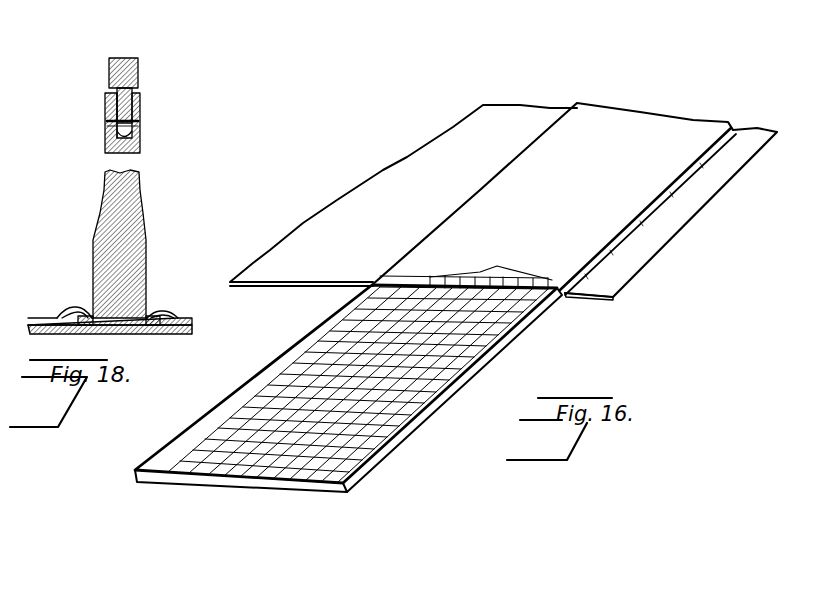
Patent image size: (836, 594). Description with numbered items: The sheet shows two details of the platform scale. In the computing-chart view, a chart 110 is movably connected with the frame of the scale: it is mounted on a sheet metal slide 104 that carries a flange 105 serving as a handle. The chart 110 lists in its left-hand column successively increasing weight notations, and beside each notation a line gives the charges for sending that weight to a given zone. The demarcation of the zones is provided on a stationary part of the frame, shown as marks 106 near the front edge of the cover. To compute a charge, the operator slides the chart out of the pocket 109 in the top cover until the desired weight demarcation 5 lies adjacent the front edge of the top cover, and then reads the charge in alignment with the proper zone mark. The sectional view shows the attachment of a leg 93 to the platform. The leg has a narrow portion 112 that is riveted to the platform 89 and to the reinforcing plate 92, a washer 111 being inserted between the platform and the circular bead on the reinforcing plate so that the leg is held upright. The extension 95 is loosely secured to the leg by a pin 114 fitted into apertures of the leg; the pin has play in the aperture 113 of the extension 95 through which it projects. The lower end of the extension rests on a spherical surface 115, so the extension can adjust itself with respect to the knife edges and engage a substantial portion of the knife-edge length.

In FIG. 18, the extension 95 is at (138, 75).
In FIG. 18, the aperture 113 is at (138, 112).
In FIG. 18, the pin 114 is at (138, 122).
In FIG. 18, the spherical surface 115 is at (140, 147).
In FIG. 18, the platform leg 93 is at (143, 222).
In FIG. 18, the narrow portion 112 is at (100, 313).
In FIG. 18, the washer 111 is at (167, 317).
In FIG. 18, the reinforcing plate 92 is at (193, 319).
In FIG. 18, the platform 89 is at (193, 330).
In FIG. 16, the zone demarcation marks 106 is at (533, 274).
In FIG. 16, the weight demarcation 5 is at (653, 253).
In FIG. 16, the pocket 109 is at (560, 296).
In FIG. 16, the computing chart 110 is at (373, 448).
In FIG. 16, the sheet metal slide 104 is at (348, 493).
In FIG. 16, the flange 105 is at (257, 484).